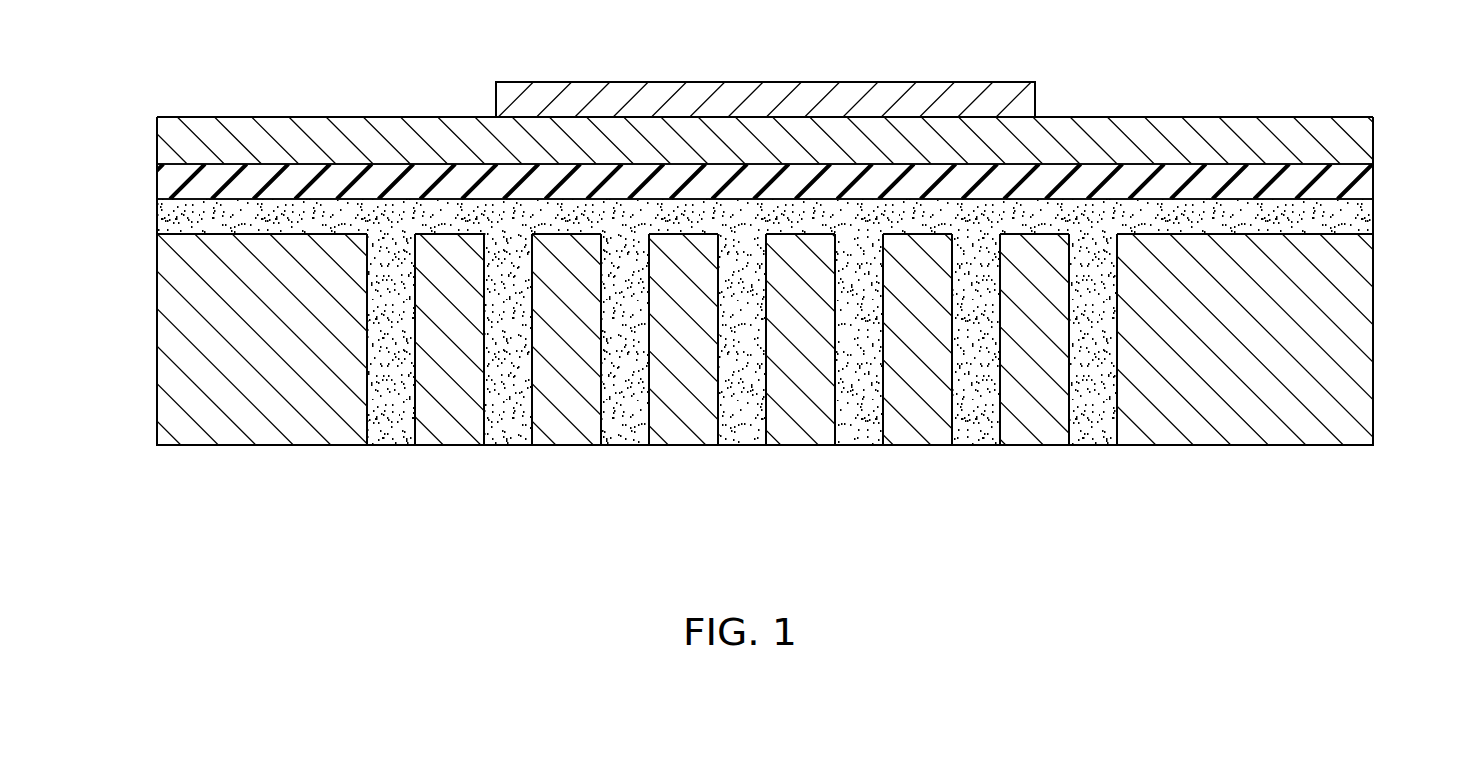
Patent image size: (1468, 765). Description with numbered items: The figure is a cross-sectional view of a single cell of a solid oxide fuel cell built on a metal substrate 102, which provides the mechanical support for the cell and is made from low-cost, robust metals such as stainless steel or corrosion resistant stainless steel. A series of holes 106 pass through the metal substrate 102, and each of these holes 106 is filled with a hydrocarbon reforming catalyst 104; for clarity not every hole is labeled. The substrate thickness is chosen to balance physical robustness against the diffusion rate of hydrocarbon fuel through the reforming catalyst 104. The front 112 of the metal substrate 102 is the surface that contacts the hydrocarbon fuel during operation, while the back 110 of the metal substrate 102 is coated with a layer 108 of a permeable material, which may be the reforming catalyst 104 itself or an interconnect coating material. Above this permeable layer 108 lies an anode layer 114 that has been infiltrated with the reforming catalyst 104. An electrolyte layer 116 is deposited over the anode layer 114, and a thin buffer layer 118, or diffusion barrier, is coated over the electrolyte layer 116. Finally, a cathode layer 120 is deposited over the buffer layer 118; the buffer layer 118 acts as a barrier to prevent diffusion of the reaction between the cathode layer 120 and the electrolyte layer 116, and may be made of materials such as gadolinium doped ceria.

The metal substrate 102 is at (273, 447).
The hydrocarbon reforming catalyst 104 is at (388, 447).
The holes 106 is at (390, 516).
The layer of permeable material 108 is at (170, 213).
The back of the metal substrate 110 is at (1340, 237).
The front of the metal substrate 112 is at (1317, 447).
The anode layer 114 is at (1365, 180).
The electrolyte layer 116 is at (1365, 140).
The buffer layer 118 is at (317, 117).
The cathode layer 120 is at (773, 82).